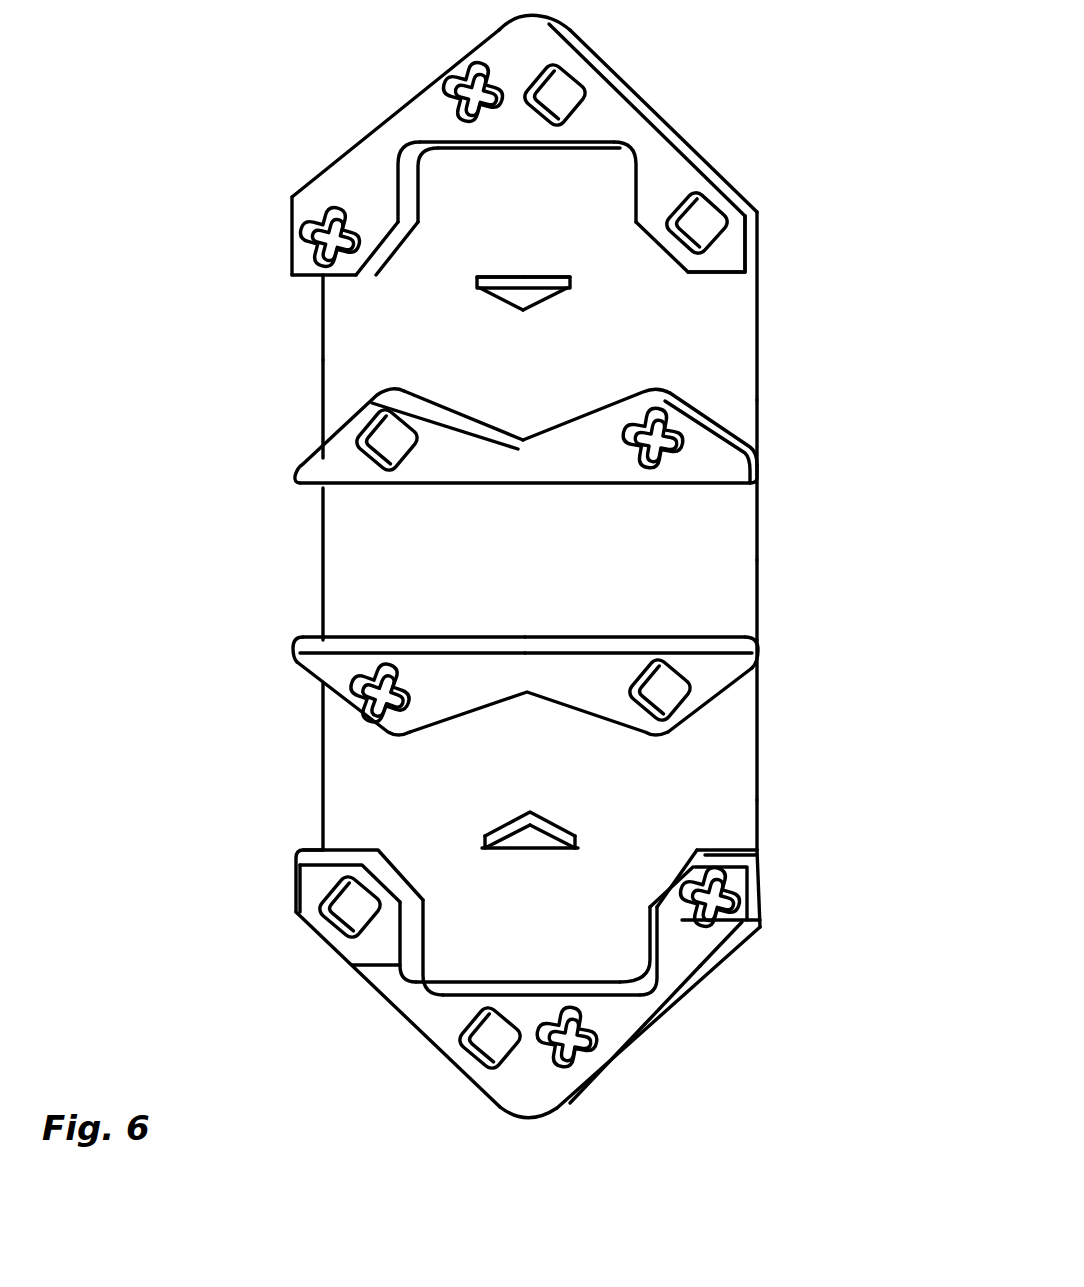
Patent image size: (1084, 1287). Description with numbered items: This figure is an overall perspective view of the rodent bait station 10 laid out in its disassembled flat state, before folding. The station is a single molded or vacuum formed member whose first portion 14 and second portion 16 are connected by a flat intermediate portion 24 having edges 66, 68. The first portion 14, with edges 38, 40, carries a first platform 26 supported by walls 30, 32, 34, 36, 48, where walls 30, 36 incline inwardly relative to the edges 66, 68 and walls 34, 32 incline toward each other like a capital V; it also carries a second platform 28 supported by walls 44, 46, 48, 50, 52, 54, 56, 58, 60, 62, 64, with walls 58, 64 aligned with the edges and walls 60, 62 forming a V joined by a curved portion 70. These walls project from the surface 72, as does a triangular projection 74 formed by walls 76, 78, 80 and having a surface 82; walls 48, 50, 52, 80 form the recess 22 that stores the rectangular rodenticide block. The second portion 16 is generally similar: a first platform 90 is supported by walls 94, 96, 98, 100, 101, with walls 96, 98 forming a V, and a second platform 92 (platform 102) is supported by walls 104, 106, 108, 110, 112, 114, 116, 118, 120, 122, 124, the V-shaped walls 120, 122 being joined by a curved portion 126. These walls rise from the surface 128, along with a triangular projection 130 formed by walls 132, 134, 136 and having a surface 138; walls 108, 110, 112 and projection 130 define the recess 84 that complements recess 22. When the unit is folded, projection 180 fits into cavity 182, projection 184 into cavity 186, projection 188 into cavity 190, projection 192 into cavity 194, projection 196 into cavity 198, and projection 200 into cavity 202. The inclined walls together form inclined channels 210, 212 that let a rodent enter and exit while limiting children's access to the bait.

The rodent bait station 10 is at (808, 68).
The first portion 14 is at (760, 208).
The second portion 16 is at (712, 1005).
The recess 22 is at (655, 200).
The flat intermediate portion 24 is at (705, 560).
The first platform 26 is at (752, 462).
The second platform 28 is at (665, 158).
The wall 30 is at (740, 418).
The wall 32 is at (610, 402).
The wall 34 is at (467, 412).
The wall 36 is at (320, 455).
The edge 38 is at (758, 340).
The edge 40 is at (323, 385).
The wall 44 is at (345, 282).
The wall 46 is at (395, 250).
The wall 48 is at (413, 205).
The wall 50 is at (520, 145).
The wall 52 is at (640, 212).
The wall 54 is at (672, 257).
The wall 56 is at (722, 278).
The wall 58 is at (748, 245).
The wall 60 is at (705, 232).
The wall 62 is at (402, 102).
The wall 64 is at (290, 245).
The edge 66 is at (323, 540).
The edge 68 is at (758, 590).
The curved portion 70 is at (555, 14).
The surface 72 is at (323, 345).
The triangular projection 74 is at (570, 290).
The wall 76 is at (490, 292).
The wall 78 is at (550, 298).
The wall 80 is at (500, 286).
The surface 82 is at (545, 288).
The recess 84 is at (370, 964).
The first platform 90 is at (725, 697).
The second platform 92 is at (735, 945).
The wall 94 is at (745, 725).
The wall 96 is at (612, 722).
The wall 98 is at (460, 713).
The wall 100 is at (325, 685).
The wall 101 is at (748, 640).
The second platform 102 is at (665, 1040).
The wall 104 is at (318, 852).
The wall 106 is at (392, 860).
The wall 108 is at (412, 940).
The wall 110 is at (530, 990).
The wall 112 is at (650, 915).
The wall 114 is at (682, 868).
The wall 116 is at (758, 850).
The wall 118 is at (762, 895).
The wall 120 is at (618, 1075).
The wall 122 is at (470, 1088).
The wall 124 is at (300, 882).
The curved portion 126 is at (542, 1116).
The surface 128 is at (740, 770).
The triangular projection 130 is at (552, 820).
The wall 132 is at (488, 832).
The wall 134 is at (575, 835).
The wall 136 is at (492, 848).
The surface 138 is at (512, 818).
The projection 180 is at (448, 75).
The cavity 182 is at (475, 1042).
The projection 184 is at (545, 1052).
The cavity 186 is at (556, 95).
The projection 188 is at (325, 230).
The cavity 190 is at (330, 922).
The projection 192 is at (730, 912).
The cavity 194 is at (705, 232).
The projection 196 is at (350, 715).
The cavity 198 is at (310, 468).
The projection 200 is at (690, 440).
The cavity 202 is at (672, 693).
The inclined channel 210 is at (355, 798).
The inclined channel 212 is at (725, 800).